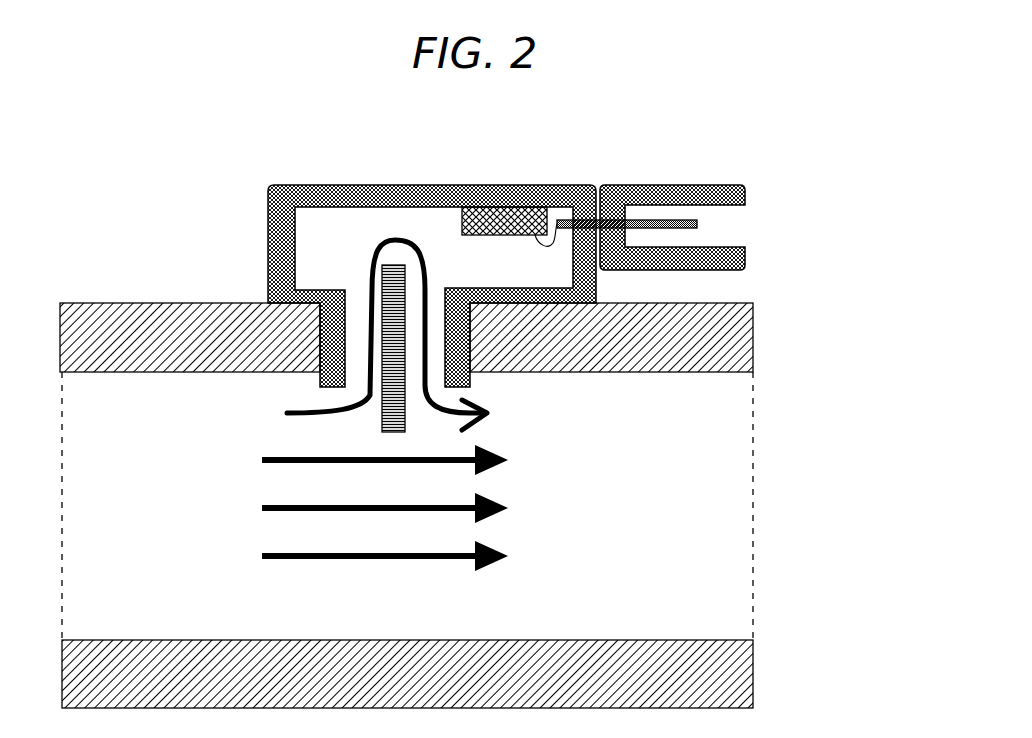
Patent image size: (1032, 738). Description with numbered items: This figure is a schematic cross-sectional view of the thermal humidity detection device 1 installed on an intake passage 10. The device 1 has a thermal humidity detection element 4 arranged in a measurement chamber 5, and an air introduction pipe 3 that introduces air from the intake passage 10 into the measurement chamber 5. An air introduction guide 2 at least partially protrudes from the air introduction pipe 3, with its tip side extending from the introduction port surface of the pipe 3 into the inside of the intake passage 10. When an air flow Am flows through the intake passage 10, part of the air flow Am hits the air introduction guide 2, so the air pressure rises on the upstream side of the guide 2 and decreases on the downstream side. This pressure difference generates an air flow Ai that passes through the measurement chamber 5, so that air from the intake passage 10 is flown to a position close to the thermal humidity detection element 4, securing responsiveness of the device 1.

The thermal humidity detection device 1 is at (479, 267).
The air introduction guide 2 is at (382, 293).
The air introduction pipe 3 is at (437, 350).
The thermal humidity detection element 4 is at (523, 207).
The measurement chamber 5 is at (342, 238).
The intake passage 10 is at (747, 480).
The air flow Ai is at (310, 417).
The air flow Am is at (263, 513).